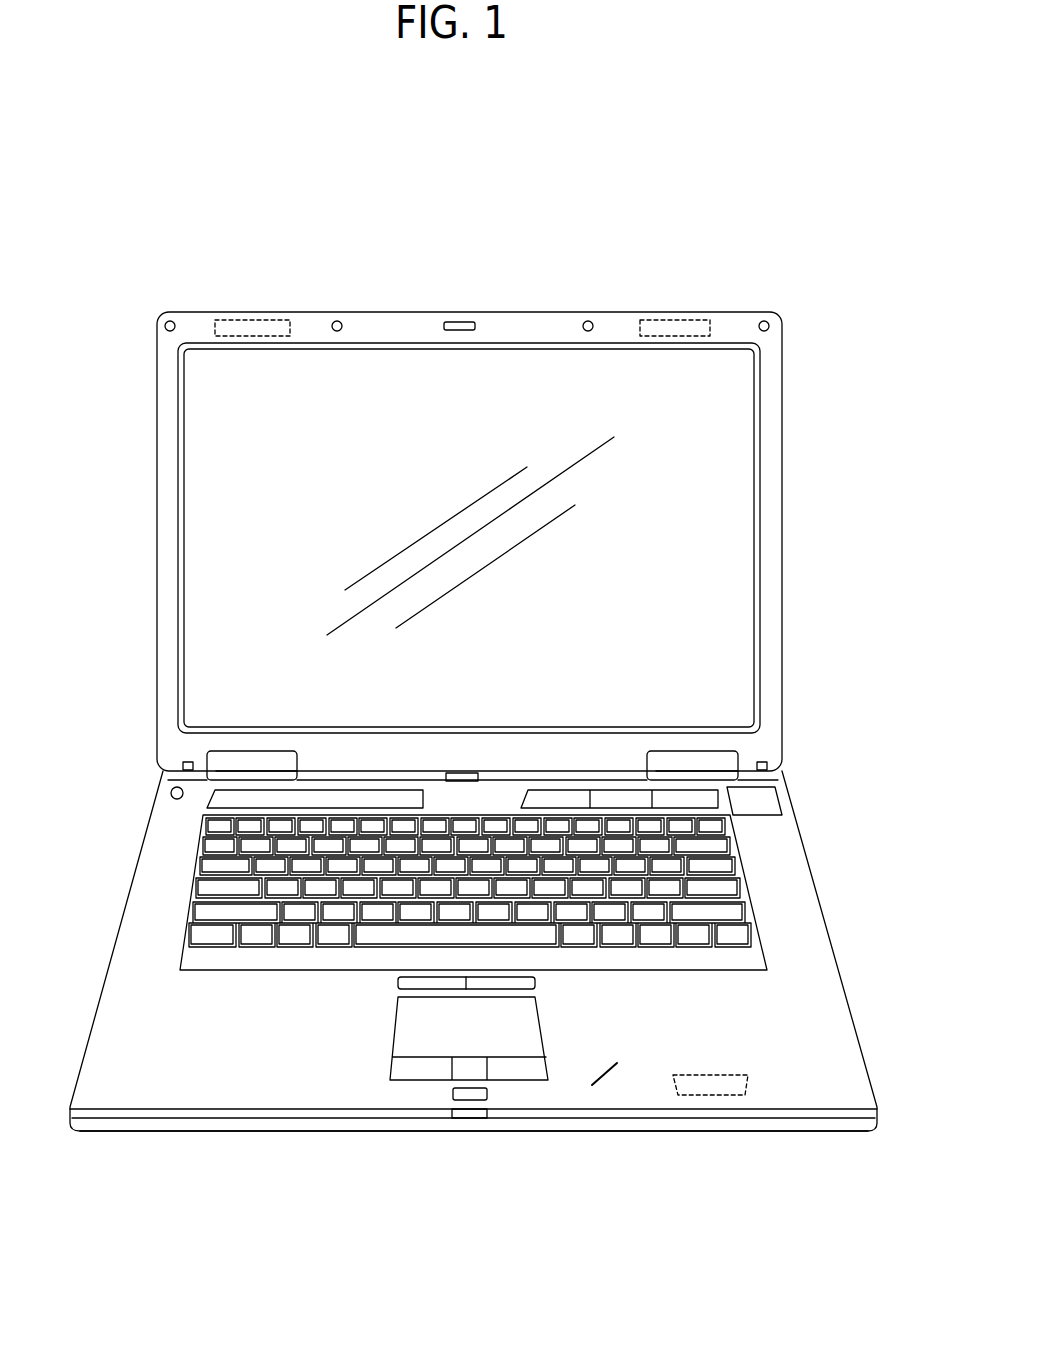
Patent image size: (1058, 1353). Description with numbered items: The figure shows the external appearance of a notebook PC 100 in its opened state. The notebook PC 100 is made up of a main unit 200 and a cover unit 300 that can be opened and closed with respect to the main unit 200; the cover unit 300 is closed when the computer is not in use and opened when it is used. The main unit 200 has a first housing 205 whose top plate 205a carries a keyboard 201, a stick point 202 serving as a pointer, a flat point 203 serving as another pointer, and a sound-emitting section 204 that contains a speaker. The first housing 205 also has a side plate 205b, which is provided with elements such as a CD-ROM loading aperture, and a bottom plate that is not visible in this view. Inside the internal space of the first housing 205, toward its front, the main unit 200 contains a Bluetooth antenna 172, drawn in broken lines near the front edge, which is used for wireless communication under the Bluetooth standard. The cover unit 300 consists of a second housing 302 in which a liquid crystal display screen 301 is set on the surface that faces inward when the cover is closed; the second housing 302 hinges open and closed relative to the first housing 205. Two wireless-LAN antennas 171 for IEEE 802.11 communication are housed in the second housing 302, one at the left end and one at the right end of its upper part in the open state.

The notebook PC 100 is at (427, 272).
The wireless-LAN antenna 171 is at (252, 318).
The Bluetooth antenna 172 is at (750, 1085).
The main unit 200 is at (838, 995).
The keyboard 201 is at (212, 912).
The stick point 202 is at (437, 897).
The flat point 203 is at (392, 1028).
The sound-emitting section 204 is at (760, 802).
The first housing 205 is at (757, 1205).
The top plate 205a is at (607, 1080).
The side plate 205b is at (567, 1125).
The cover unit 300 is at (785, 358).
The liquid crystal display screen 301 is at (703, 455).
The second housing 302 is at (785, 588).